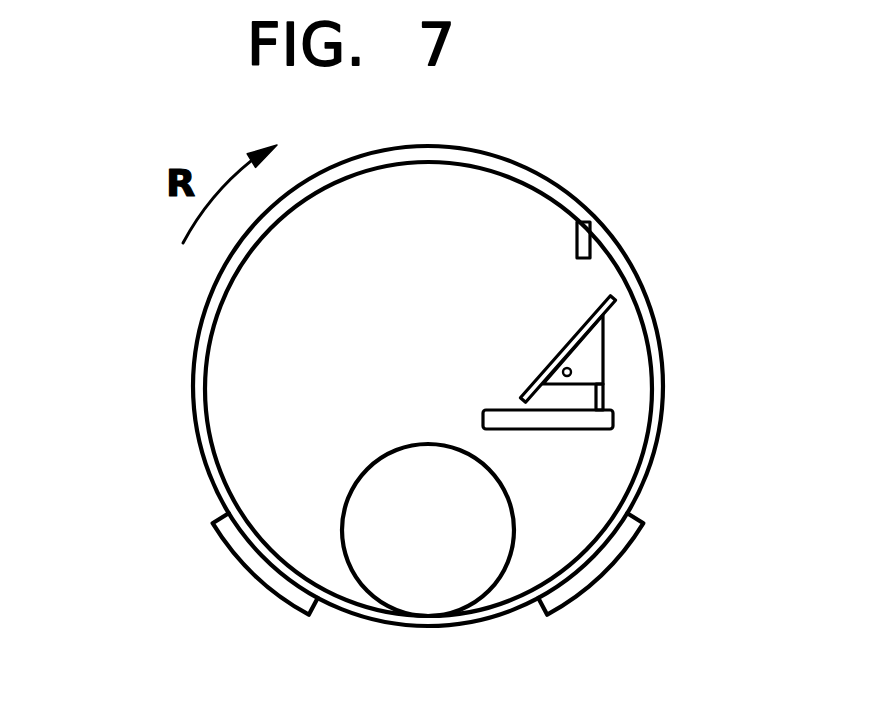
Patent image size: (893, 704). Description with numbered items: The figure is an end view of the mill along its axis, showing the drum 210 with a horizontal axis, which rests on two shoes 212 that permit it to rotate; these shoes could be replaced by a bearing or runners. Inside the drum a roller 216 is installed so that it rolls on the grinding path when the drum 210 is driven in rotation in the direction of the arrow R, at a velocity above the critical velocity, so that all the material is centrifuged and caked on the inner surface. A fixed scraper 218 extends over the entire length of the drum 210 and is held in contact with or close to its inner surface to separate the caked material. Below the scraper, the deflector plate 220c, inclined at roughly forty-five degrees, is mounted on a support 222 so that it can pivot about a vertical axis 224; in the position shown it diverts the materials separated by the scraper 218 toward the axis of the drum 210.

The drum 210 is at (193, 428).
The shoes 212 is at (238, 552).
The roller 216 is at (437, 614).
The fixed scraper 218 is at (581, 226).
The deflector plate 220c is at (585, 334).
The support 222 is at (605, 430).
The vertical axis 224 is at (603, 402).